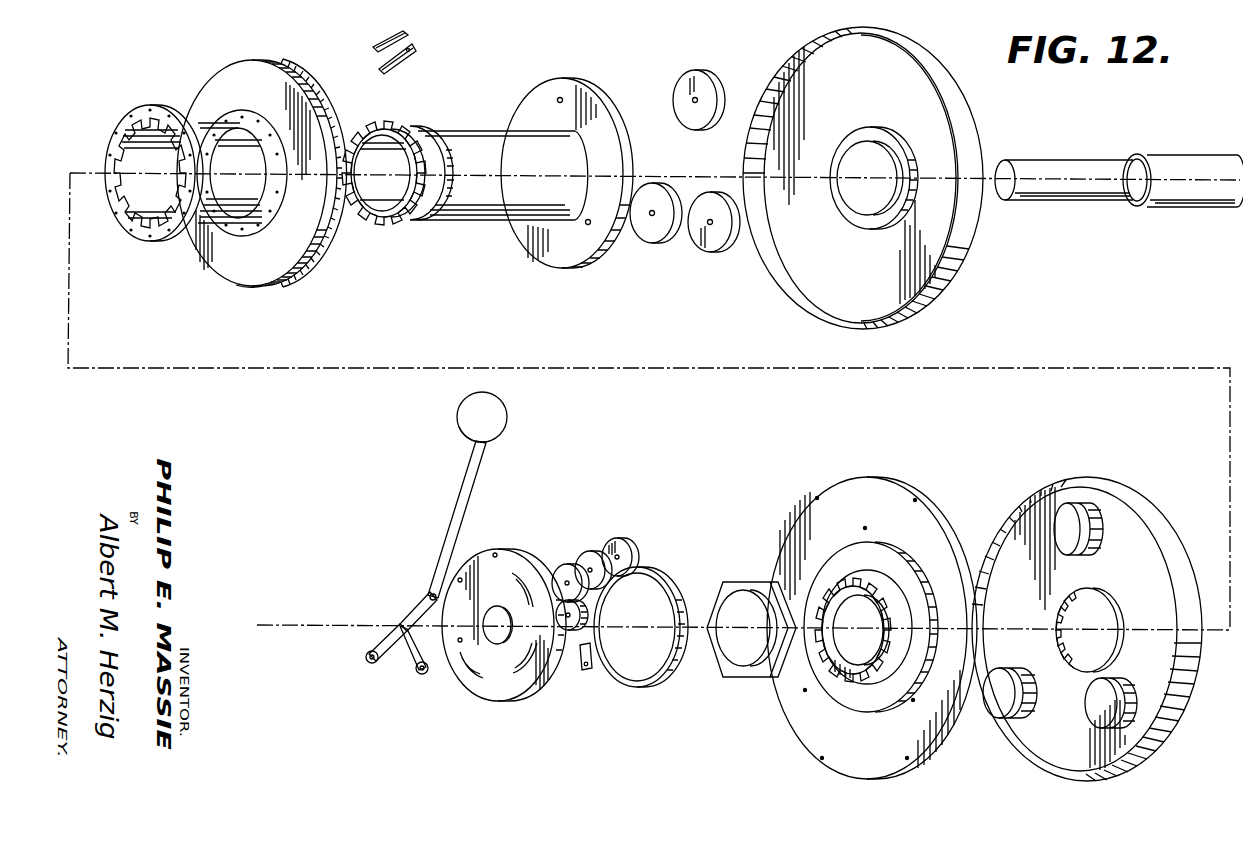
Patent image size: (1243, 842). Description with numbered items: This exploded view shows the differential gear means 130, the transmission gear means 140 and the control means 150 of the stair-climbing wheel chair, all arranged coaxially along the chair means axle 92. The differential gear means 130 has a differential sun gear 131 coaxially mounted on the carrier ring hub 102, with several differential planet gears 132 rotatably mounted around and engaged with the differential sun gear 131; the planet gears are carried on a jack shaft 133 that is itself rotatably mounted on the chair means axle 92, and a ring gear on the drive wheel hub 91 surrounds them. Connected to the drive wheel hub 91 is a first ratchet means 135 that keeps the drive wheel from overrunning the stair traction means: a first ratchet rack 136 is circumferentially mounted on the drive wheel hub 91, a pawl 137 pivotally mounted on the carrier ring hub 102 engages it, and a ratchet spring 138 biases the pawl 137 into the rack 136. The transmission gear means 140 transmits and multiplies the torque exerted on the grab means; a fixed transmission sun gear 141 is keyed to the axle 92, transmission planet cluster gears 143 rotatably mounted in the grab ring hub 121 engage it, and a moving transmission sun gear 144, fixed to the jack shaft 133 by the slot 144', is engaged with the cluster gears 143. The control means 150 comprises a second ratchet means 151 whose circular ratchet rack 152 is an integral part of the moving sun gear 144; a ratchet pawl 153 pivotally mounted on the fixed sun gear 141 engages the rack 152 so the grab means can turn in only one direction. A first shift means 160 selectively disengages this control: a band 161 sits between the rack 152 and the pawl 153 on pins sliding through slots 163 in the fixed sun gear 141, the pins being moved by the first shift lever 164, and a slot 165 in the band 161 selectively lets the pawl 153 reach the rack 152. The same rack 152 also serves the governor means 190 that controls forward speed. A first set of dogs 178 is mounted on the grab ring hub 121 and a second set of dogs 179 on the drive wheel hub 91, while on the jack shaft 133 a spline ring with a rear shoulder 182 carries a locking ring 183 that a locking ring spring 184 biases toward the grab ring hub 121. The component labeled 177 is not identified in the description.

The drive wheel hub 91 is at (244, 281).
The chair means axle 92 is at (1100, 163).
The carrier ring hub 102 is at (962, 92).
The grab ring hub 121 is at (1110, 483).
The differential gear means 130 is at (673, 283).
The differential sun gear 131 is at (896, 133).
The differential planet gears 132 is at (713, 81).
The jack shaft 133 is at (488, 222).
The first ratchet means 135 is at (285, 56).
The first ratchet rack 136 is at (327, 124).
The pawl 137 is at (412, 61).
The ratchet spring 138 is at (393, 32).
The transmission gear means 140 is at (935, 491).
The fixed transmission sun gear 141 is at (520, 699).
The transmission planet cluster gears 143 is at (1066, 508).
The moving transmission sun gear 144 is at (879, 627).
The slot 144' is at (860, 630).
The control means 150 is at (700, 581).
The second ratchet means 151 is at (790, 697).
The circular ratchet rack 152 is at (850, 673).
The ratchet pawl 153 is at (583, 672).
The first shift means 160 is at (620, 532).
The band 161 is at (664, 688).
The slots 163 is at (513, 580).
The first shift lever 164 is at (461, 505).
The slot 165 is at (610, 591).
The flange ring 177 is at (178, 236).
The first set of dogs 178 is at (1086, 600).
The second set of dogs 179 is at (170, 205).
The rear shoulder 182 is at (432, 138).
The locking ring 183 is at (367, 222).
The locking ring spring 184 is at (418, 220).
The governor means 190 is at (574, 513).